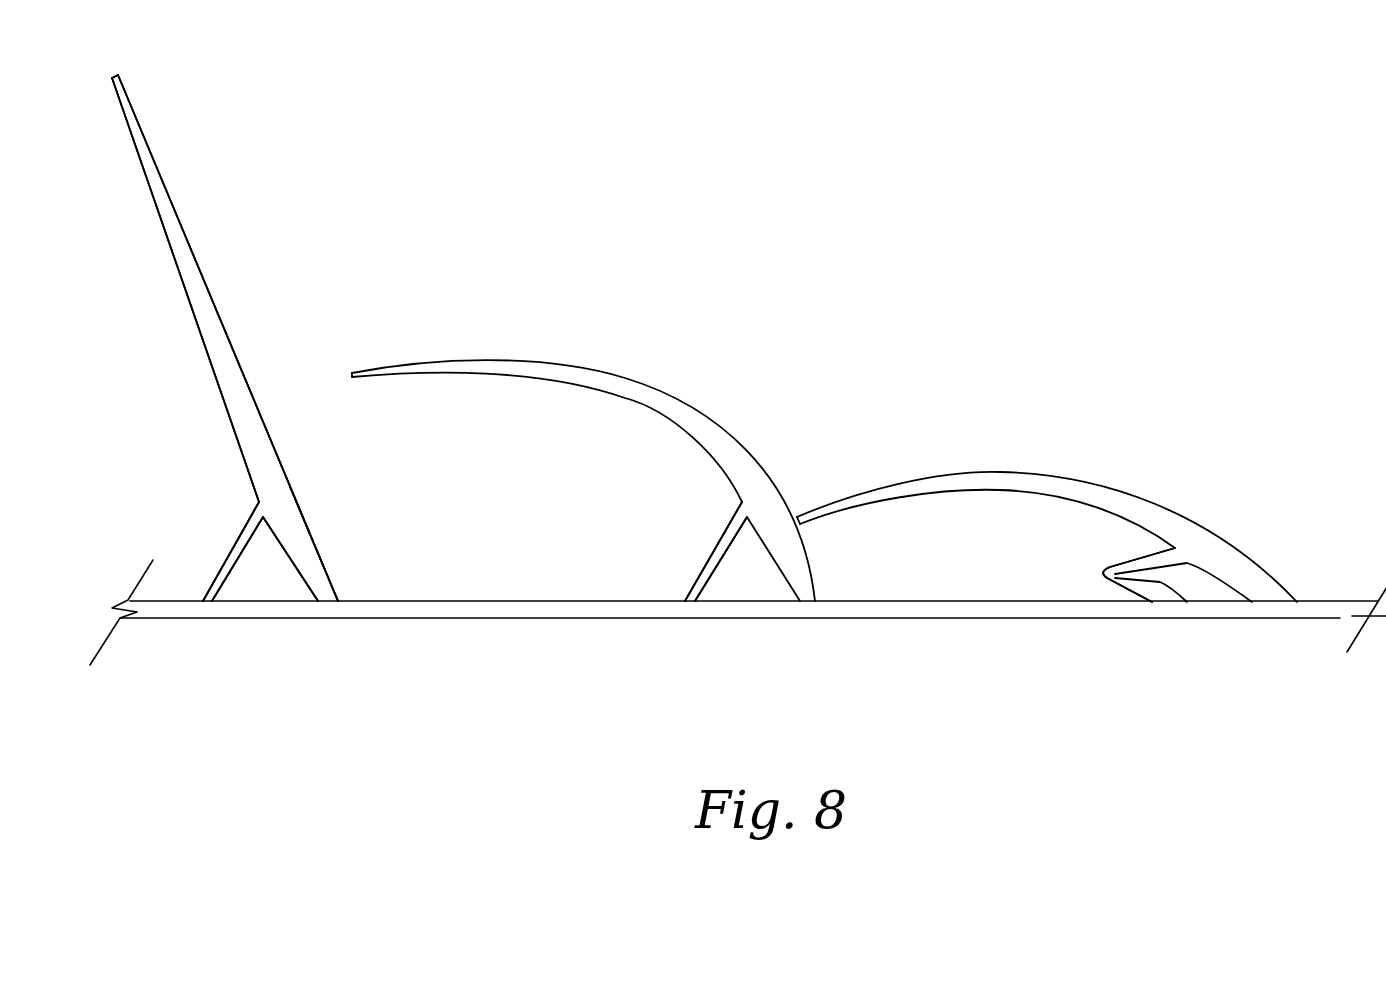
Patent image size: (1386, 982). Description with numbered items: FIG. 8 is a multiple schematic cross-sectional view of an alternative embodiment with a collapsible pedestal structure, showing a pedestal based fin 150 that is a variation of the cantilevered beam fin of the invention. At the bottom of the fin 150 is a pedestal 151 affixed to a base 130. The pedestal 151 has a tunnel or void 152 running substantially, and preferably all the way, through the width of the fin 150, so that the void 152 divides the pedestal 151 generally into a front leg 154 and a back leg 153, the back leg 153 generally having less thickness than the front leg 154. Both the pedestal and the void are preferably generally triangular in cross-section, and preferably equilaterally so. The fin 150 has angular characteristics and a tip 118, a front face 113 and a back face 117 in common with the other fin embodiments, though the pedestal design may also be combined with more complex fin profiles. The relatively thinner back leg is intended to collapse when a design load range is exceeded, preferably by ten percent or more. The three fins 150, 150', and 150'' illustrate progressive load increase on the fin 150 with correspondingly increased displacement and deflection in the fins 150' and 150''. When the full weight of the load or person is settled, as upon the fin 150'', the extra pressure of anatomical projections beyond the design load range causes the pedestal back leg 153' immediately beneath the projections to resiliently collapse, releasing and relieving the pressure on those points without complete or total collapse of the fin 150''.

The front face 113 is at (230, 335).
The back face 117 is at (182, 284).
The tip 118 is at (118, 76).
The base 130 is at (507, 609).
The pedestal based fin 150 is at (225, 338).
The pedestal based fin under increased load 150' is at (583, 407).
The pedestal based fin under full load 150'' is at (1047, 460).
The pedestal 151 is at (1084, 577).
The void 152 is at (733, 587).
The back leg 153 is at (203, 550).
The pedestal back leg of fully loaded fin 153' is at (1113, 560).
The front leg 154 is at (300, 543).